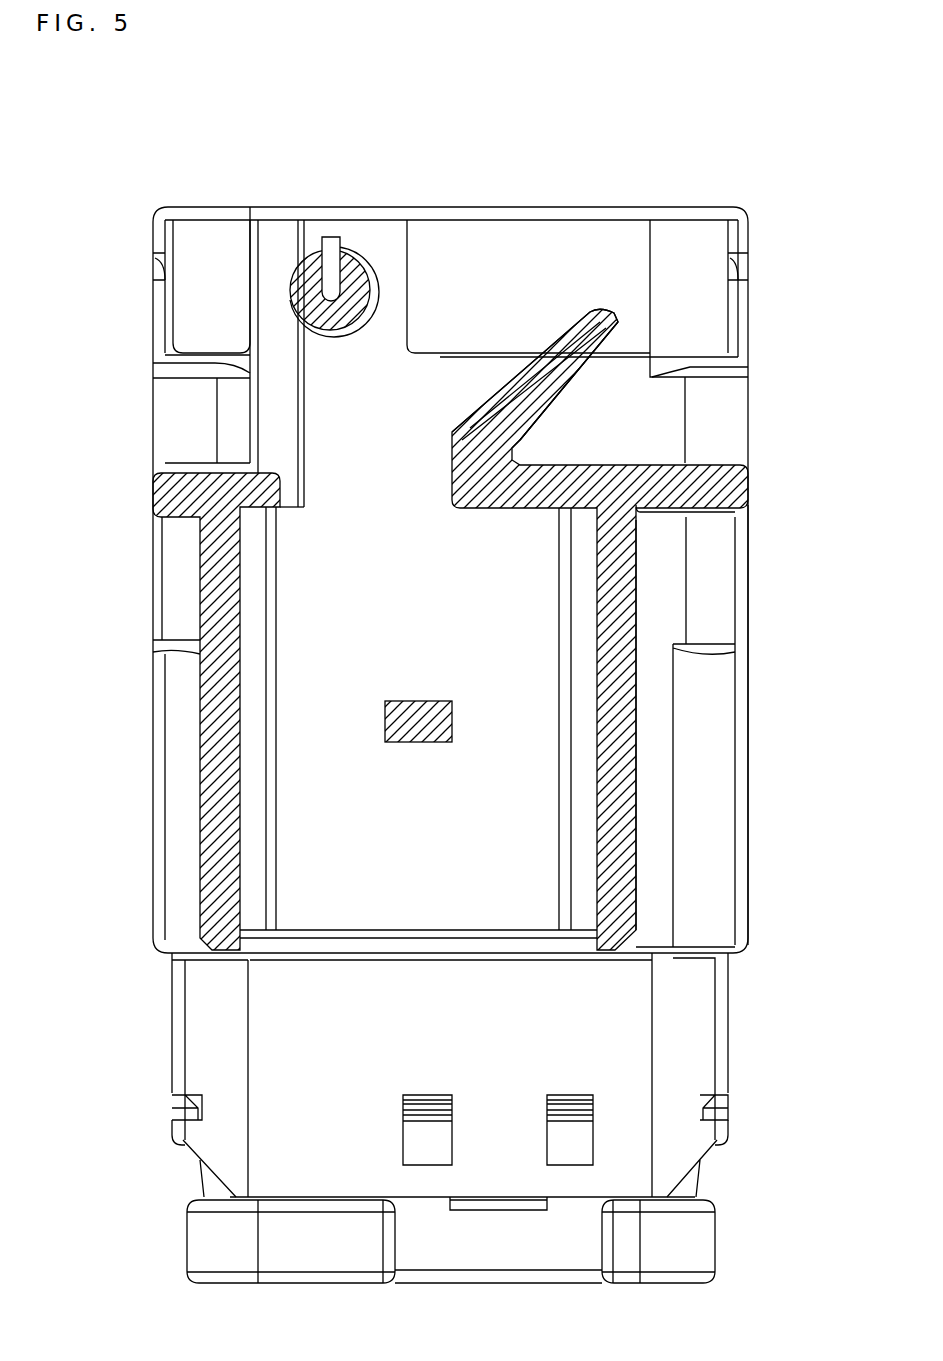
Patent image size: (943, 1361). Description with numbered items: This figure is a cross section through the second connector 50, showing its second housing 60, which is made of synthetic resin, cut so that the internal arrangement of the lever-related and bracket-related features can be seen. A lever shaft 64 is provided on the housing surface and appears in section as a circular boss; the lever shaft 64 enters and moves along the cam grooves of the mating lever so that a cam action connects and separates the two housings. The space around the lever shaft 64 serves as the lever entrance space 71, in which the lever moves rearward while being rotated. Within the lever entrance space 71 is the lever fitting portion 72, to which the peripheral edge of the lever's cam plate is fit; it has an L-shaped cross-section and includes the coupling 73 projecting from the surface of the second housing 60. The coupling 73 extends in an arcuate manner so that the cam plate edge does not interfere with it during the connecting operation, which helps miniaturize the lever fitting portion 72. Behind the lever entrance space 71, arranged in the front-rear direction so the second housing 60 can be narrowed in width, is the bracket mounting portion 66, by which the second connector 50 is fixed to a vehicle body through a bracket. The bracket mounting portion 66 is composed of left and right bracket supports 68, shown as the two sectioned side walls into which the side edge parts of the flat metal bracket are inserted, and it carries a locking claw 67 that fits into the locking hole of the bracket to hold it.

The second connector 50 is at (457, 124).
The second housing 60 is at (430, 197).
The lever shaft 64 is at (358, 272).
The bracket mounting portion 66 is at (656, 738).
The locking claw 67 is at (417, 743).
The bracket support 68 is at (213, 775).
The lever entrance space 71 is at (382, 352).
The lever fitting portion 72 is at (598, 312).
The coupling 73 is at (550, 380).